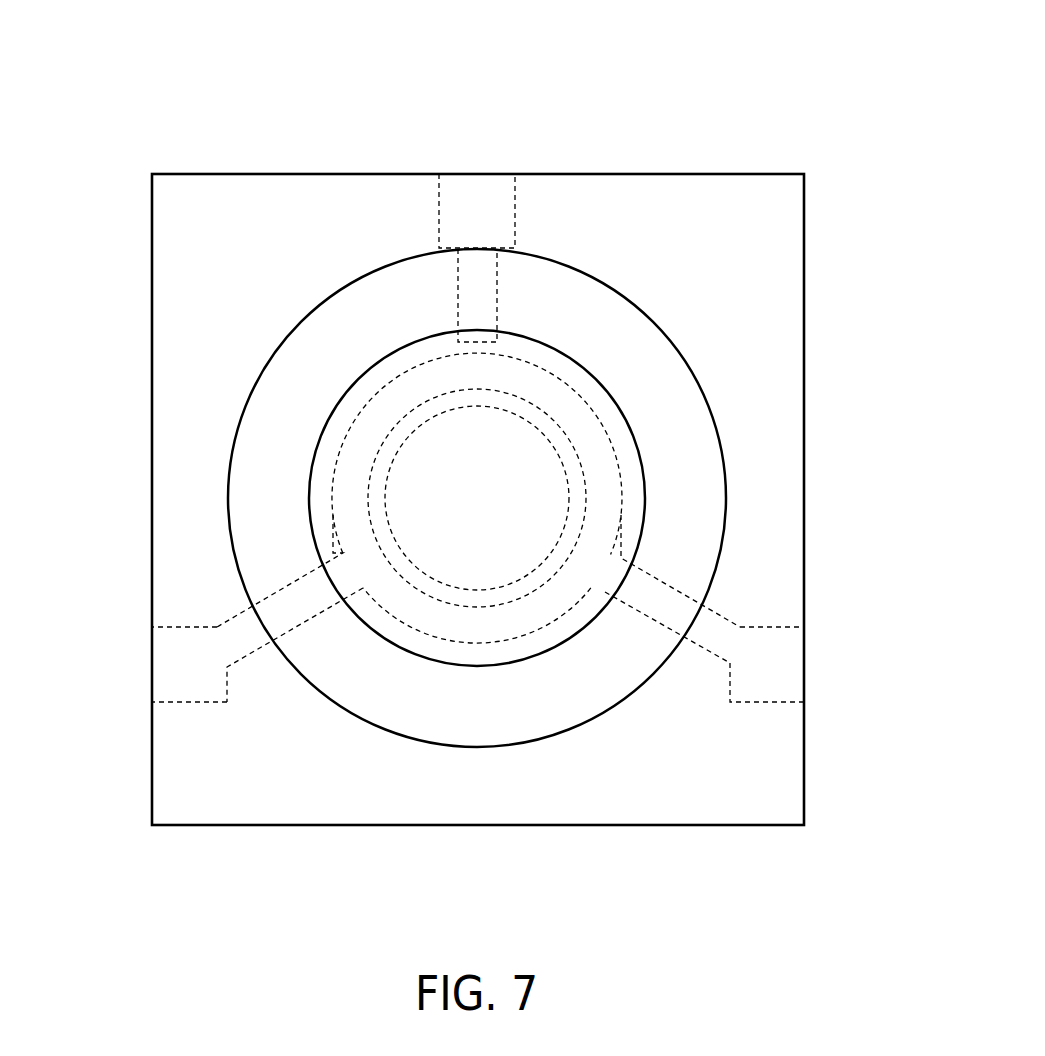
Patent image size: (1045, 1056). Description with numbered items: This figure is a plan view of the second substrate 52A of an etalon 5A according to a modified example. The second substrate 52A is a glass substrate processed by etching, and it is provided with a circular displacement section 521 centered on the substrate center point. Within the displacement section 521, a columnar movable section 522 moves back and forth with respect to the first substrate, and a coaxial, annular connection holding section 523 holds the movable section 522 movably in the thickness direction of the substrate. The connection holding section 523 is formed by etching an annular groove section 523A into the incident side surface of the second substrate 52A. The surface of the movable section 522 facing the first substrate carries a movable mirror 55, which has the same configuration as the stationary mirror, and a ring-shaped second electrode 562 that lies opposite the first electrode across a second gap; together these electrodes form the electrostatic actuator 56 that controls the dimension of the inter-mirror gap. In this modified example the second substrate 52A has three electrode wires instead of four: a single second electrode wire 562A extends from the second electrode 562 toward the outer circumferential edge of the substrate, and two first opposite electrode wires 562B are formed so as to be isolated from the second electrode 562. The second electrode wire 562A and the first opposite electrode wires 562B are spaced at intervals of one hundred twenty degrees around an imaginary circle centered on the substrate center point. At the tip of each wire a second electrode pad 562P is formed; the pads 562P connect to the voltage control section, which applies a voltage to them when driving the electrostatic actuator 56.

The etalon 5A is at (479, 416).
The second substrate 52A is at (478, 456).
The displacement section 521 is at (262, 313).
The movable section 522 is at (573, 368).
The connection holding section 523 is at (479, 476).
The annular groove section 523A is at (588, 281).
The movable mirror 55 is at (447, 427).
The electrostatic actuator 56 is at (479, 415).
The second electrode 562 is at (479, 415).
The second electrode wire 562A is at (242, 655).
The first opposite electrode wire 562B is at (470, 303).
The second electrode pad 562P is at (476, 192).